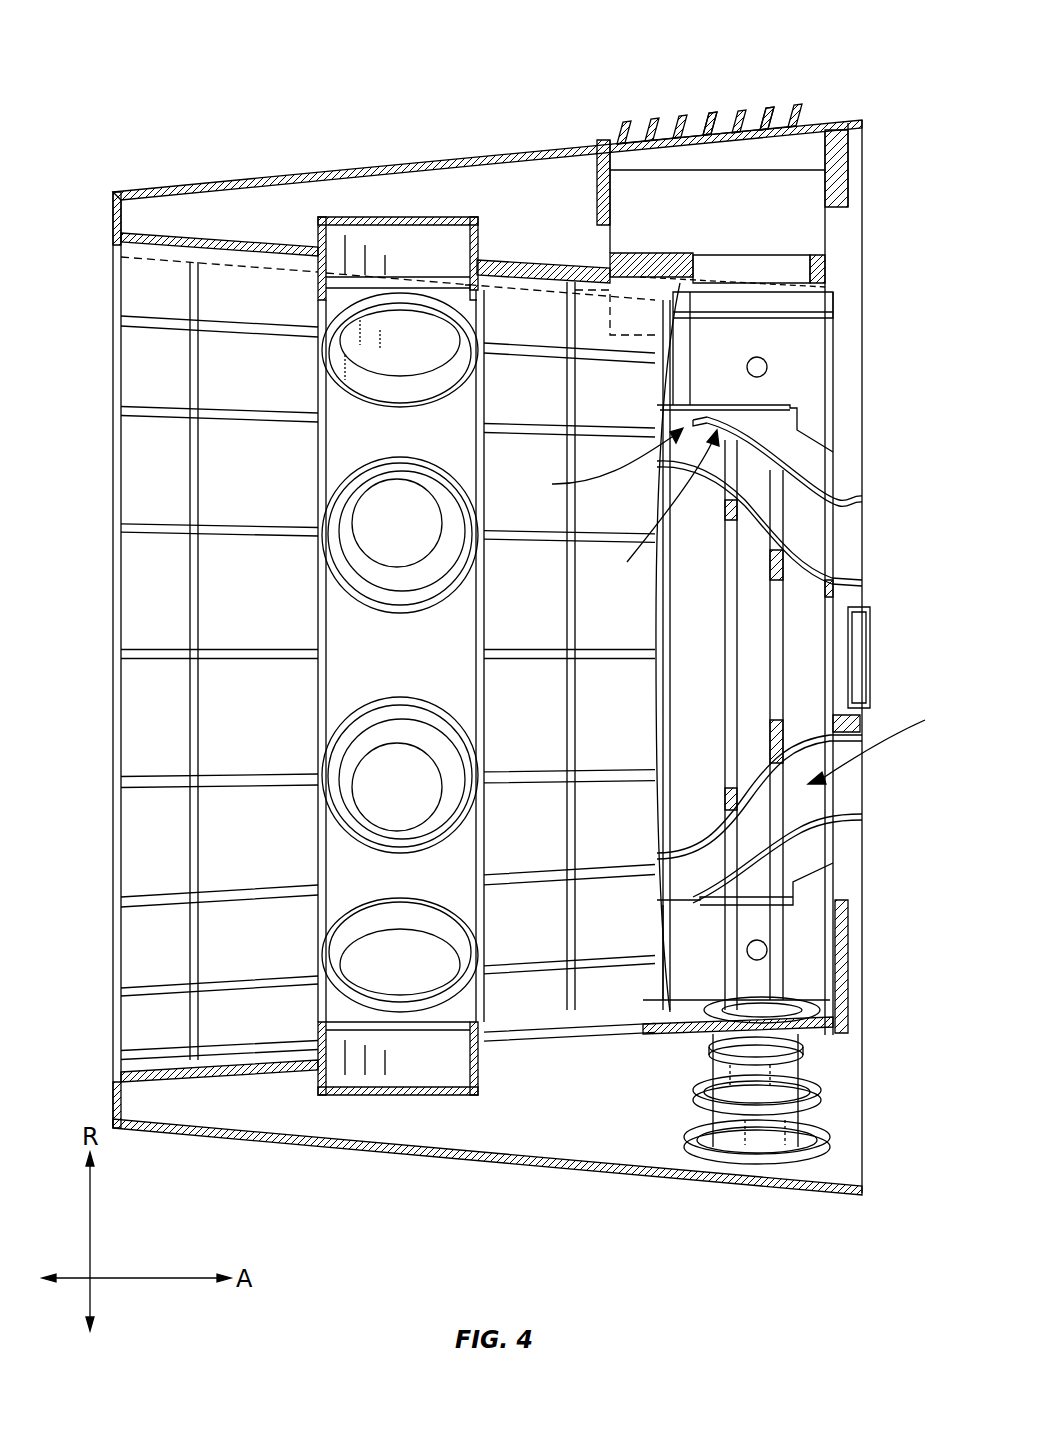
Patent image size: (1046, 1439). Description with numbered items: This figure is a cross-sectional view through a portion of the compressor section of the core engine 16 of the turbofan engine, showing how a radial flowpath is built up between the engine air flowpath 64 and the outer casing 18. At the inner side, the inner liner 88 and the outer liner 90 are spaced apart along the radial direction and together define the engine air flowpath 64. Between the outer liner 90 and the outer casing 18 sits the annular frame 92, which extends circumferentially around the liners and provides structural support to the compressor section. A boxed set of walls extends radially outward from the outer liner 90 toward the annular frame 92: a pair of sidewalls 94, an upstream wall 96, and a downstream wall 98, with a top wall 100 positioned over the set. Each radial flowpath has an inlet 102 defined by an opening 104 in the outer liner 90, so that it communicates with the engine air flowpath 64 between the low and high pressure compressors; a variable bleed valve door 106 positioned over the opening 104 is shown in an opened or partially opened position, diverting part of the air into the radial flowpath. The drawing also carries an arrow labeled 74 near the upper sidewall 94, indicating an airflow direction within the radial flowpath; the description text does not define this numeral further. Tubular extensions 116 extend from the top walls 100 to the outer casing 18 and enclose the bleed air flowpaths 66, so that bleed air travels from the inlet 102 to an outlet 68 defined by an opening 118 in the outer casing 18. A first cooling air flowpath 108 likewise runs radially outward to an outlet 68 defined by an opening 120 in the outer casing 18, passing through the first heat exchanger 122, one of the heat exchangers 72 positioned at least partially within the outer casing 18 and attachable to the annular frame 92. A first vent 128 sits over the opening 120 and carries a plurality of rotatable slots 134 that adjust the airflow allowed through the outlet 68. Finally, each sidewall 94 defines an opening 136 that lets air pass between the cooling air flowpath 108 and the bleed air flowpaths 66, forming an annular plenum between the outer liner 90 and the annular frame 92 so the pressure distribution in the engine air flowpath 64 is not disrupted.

The core engine 16 is at (686, 78).
The outer casing 18 is at (535, 146).
The engine air flowpath 64 is at (882, 737).
The bleed air flowpaths 66 is at (808, 985).
The outlet 68 is at (795, 1165).
The heat exchanger 72 is at (790, 237).
The inlet 74 is at (806, 352).
The inner liner 88 is at (797, 743).
The outer liner 90 is at (693, 897).
The annular frame 92 is at (557, 1163).
The sidewalls 94 is at (793, 326).
The upstream wall 96 is at (668, 345).
The downstream wall 98 is at (835, 372).
The top wall 100 is at (720, 1005).
The inlet 102 is at (655, 511).
The opening 104 is at (598, 462).
The variable bleed valve door 106 is at (793, 458).
The first cooling air flowpath 108 is at (703, 345).
The tubular extensions 116 is at (797, 1070).
The opening 118 is at (816, 1150).
The opening 120 is at (767, 105).
The first heat exchanger 122 is at (808, 185).
The first vent 128 is at (665, 124).
The slots 134 is at (705, 105).
The opening 136 is at (762, 357).